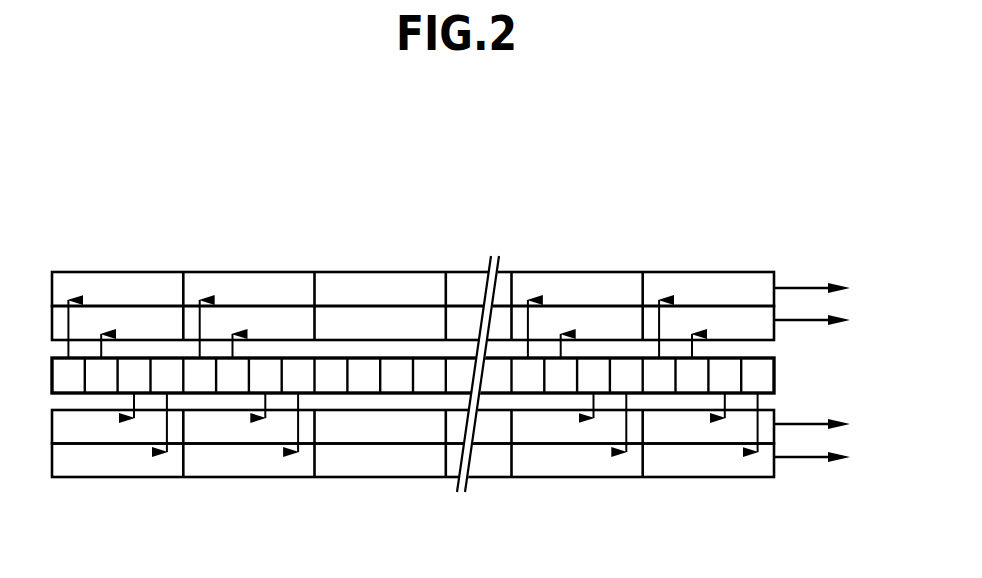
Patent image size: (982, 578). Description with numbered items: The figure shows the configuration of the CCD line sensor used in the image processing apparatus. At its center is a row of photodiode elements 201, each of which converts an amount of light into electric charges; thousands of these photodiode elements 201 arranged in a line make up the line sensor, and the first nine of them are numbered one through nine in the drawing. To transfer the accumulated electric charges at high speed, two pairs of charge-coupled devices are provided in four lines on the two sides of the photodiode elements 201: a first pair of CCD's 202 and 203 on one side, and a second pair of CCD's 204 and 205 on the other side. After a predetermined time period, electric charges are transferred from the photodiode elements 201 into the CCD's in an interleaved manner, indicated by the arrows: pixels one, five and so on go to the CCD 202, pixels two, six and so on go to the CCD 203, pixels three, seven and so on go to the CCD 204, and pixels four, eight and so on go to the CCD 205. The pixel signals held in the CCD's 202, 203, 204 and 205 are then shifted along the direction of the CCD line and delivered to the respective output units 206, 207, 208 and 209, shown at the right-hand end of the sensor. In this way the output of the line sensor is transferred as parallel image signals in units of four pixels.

The photodiode element 201 is at (52, 358).
The CCD 202 is at (83, 288).
The CCD 203 is at (137, 323).
The CCD 204 is at (83, 458).
The CCD 205 is at (152, 428).
The output unit 206 is at (787, 287).
The output unit 207 is at (803, 318).
The output unit 208 is at (792, 462).
The output unit 209 is at (815, 426).